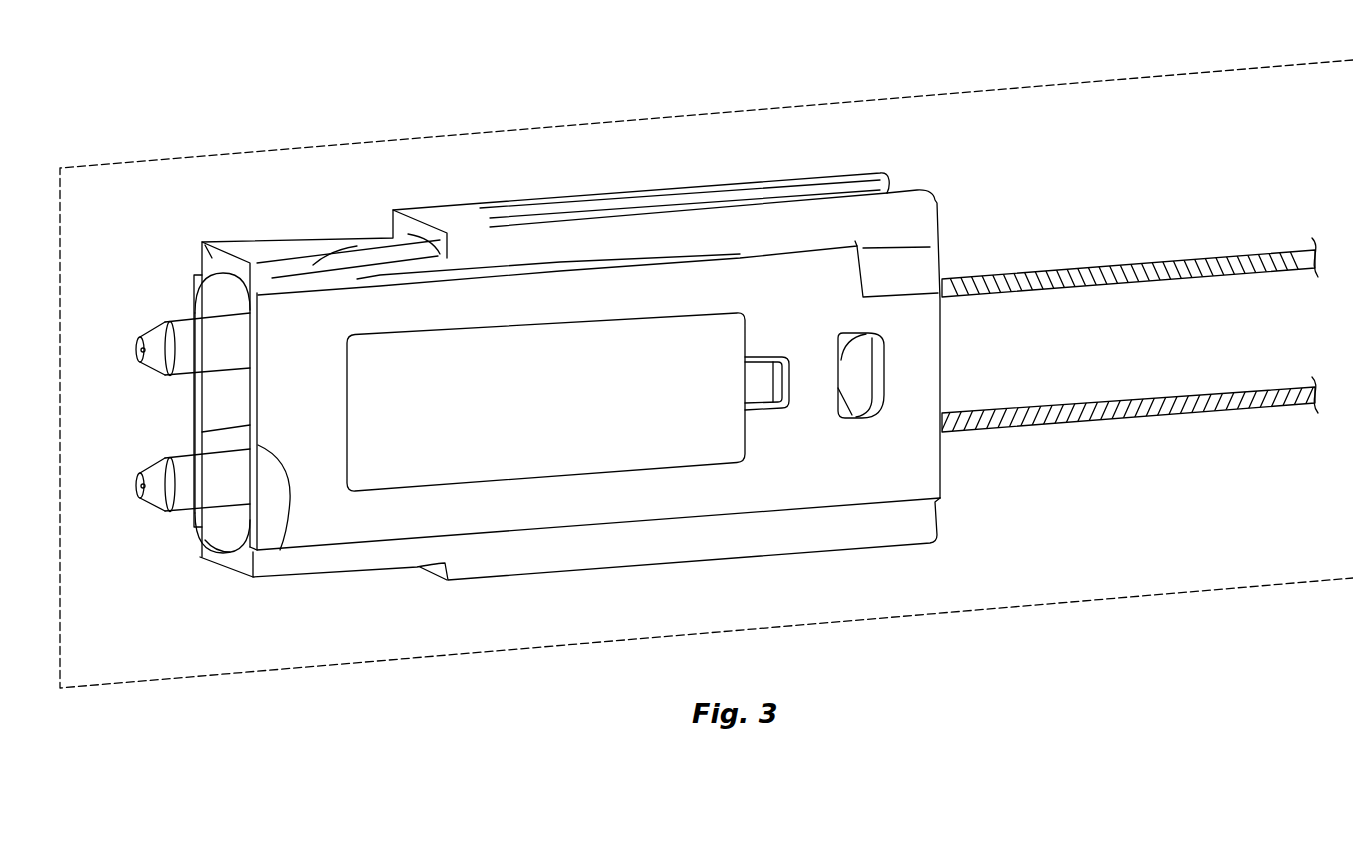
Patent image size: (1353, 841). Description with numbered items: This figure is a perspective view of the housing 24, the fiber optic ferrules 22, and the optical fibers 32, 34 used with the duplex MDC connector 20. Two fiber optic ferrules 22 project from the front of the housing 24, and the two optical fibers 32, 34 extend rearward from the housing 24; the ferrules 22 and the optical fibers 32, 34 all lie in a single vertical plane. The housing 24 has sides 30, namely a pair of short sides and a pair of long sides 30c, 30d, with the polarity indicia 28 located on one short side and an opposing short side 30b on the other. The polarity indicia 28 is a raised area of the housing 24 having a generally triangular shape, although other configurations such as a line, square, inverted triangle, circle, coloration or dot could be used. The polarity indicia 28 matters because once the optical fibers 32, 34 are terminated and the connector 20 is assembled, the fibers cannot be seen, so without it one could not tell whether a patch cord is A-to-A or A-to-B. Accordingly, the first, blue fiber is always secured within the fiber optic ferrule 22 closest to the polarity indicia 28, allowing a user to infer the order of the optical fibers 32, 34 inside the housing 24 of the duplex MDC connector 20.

The duplex MDC connector 20 is at (655, 104).
The fiber optic ferrules 22 is at (178, 320).
The housing 24 is at (377, 528).
The polarity indicia 28 is at (278, 253).
The sides of the housing 30 is at (205, 243).
The opposing short side 30b is at (221, 555).
The long side 30c is at (193, 398).
The long side 30d is at (280, 550).
The optical fiber 32 is at (1137, 262).
The optical fiber 34 is at (1137, 418).